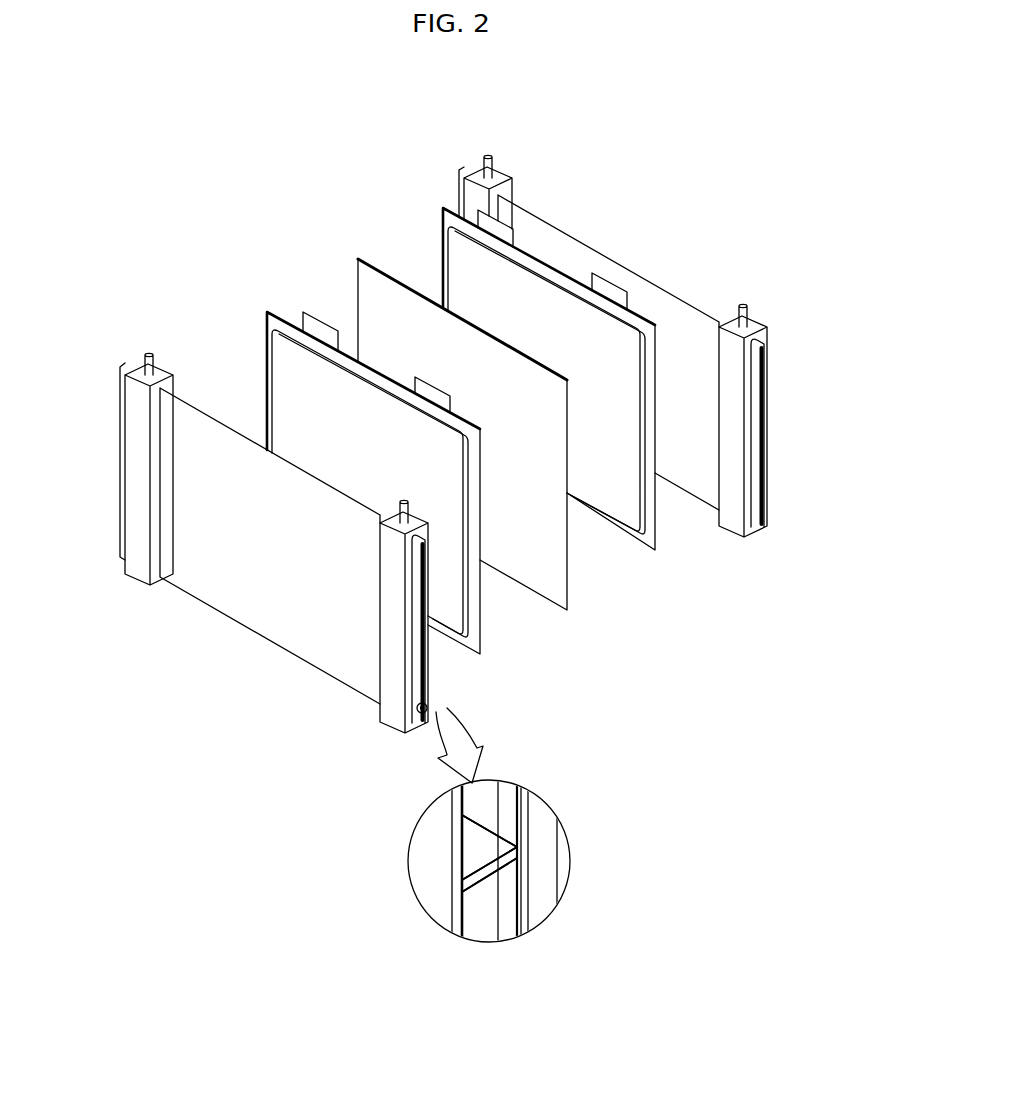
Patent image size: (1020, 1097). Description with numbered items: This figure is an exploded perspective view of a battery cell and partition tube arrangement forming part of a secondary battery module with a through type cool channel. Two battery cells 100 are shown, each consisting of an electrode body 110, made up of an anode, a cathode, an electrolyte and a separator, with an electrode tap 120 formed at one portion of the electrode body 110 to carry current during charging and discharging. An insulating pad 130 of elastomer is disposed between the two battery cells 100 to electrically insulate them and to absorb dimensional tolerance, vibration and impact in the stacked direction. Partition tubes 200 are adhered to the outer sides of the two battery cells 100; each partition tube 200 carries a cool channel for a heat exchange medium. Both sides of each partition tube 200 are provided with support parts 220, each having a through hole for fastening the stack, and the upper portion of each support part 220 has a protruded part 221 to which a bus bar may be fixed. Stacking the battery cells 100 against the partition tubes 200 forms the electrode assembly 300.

The battery cell 100 is at (263, 303).
The electrode body 110 is at (295, 337).
The electrode tap 120 is at (432, 393).
The insulating pad 130 is at (377, 277).
The partition tube 200 is at (203, 410).
The support part 220 is at (480, 178).
The protruded part 221 is at (497, 168).
The electrode assembly 300 is at (241, 150).